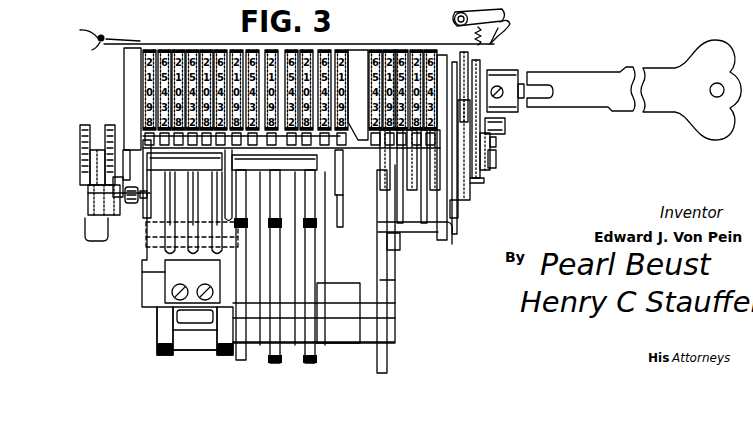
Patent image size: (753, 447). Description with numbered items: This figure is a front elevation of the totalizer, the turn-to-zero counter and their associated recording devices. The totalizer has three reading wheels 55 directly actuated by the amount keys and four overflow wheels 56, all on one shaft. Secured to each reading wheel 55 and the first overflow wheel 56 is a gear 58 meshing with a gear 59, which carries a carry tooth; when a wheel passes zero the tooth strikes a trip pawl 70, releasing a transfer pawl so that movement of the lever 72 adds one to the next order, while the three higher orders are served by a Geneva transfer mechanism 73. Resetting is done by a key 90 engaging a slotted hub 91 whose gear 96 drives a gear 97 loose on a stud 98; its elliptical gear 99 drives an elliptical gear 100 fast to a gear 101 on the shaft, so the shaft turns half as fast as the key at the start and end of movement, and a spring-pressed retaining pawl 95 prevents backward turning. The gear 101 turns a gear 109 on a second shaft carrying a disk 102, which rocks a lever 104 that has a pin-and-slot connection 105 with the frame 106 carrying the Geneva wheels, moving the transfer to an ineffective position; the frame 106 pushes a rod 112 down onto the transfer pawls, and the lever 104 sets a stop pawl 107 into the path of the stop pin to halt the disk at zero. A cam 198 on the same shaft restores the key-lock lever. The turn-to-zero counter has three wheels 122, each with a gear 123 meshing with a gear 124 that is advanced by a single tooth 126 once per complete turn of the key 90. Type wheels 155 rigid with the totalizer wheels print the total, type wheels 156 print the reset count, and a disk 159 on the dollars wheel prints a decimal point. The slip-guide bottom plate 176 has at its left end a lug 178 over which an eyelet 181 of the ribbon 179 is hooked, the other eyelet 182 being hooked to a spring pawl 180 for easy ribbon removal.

The reading or indicating wheel 55 is at (353, 49).
The overflow wheel 56 is at (247, 50).
The gear 58 is at (330, 48).
The gear 59 is at (342, 166).
The trip pawl 70 is at (342, 210).
The lever 72 is at (276, 247).
The Geneva transfer mechanism 73 is at (153, 150).
The key 90 is at (552, 80).
The slotted hub 91 is at (518, 112).
The retaining pawl 95 is at (455, 228).
The gear 96 is at (483, 63).
The gear 97 is at (493, 160).
The stud 98 is at (496, 144).
The elliptical gear 99 is at (484, 180).
The elliptical gear 100 is at (488, 123).
The gear 101 is at (468, 56).
The disk 102 is at (116, 126).
The lever 104 is at (120, 215).
The pin-and-slot connection 105 is at (118, 220).
The frame 106 is at (147, 225).
The stop pawl 107 is at (90, 207).
The gear 109 is at (464, 207).
The rod 112 is at (217, 253).
The turn-to-zero counter wheel 122 is at (406, 50).
The gear 123 is at (440, 32).
The gear 124 is at (424, 223).
The single tooth 126 is at (470, 190).
The type wheel 155 is at (149, 50).
The type wheel 156 is at (390, 50).
The disk 159 is at (282, 26).
The bottom plate 176 is at (139, 40).
The lug 178 is at (81, 30).
The ribbon 179 is at (93, 52).
The spring pawl 180 is at (488, 14).
The eyelet 181 is at (102, 35).
The eyelet 182 is at (529, 12).
The cam 198 is at (80, 139).